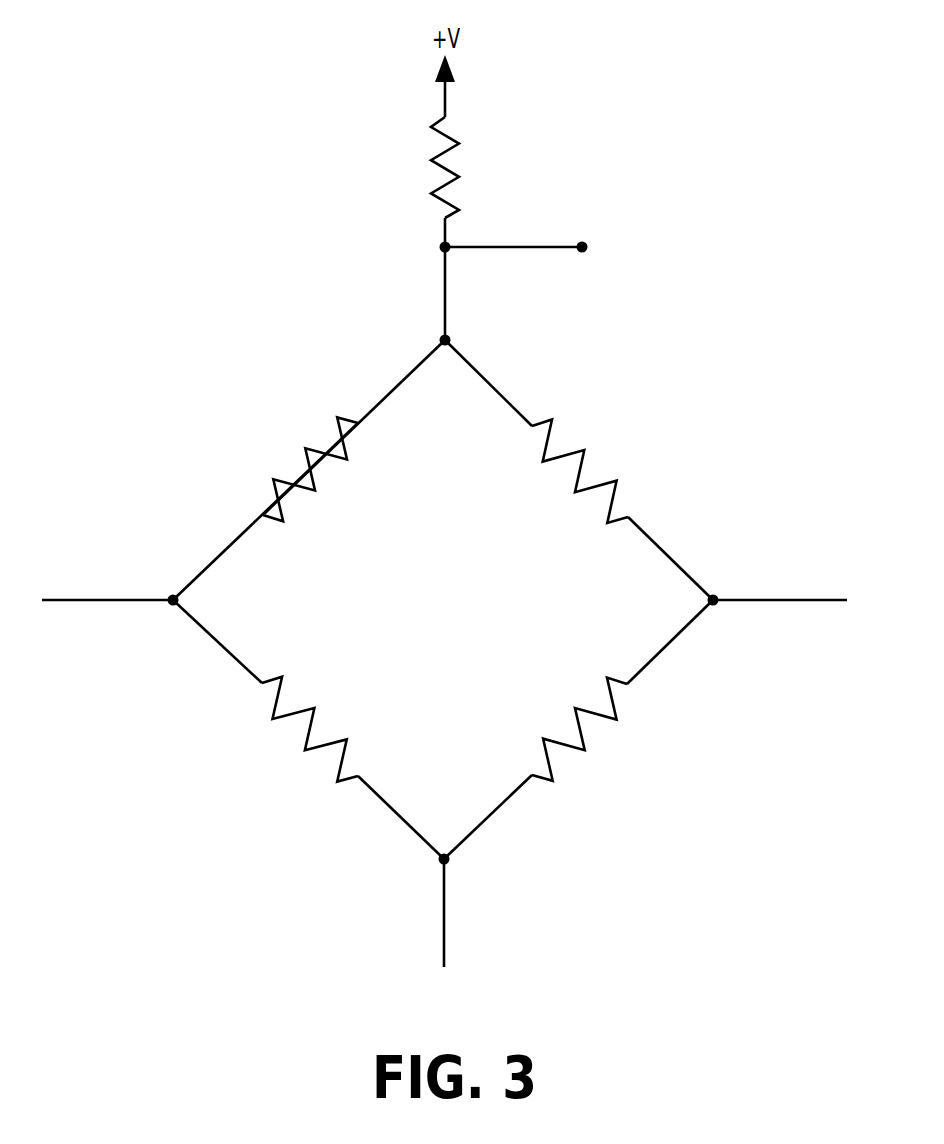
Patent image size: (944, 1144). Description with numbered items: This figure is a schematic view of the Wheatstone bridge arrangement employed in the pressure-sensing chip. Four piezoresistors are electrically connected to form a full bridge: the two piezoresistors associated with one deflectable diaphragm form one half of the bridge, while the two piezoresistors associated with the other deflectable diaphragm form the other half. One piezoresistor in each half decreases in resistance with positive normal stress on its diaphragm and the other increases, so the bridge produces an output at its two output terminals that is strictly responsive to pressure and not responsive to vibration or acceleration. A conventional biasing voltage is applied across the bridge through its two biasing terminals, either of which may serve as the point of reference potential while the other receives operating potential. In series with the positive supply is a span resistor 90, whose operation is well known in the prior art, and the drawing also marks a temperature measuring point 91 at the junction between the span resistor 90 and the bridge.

The span resistor 90 is at (458, 142).
The temperature measuring point 91 is at (528, 247).